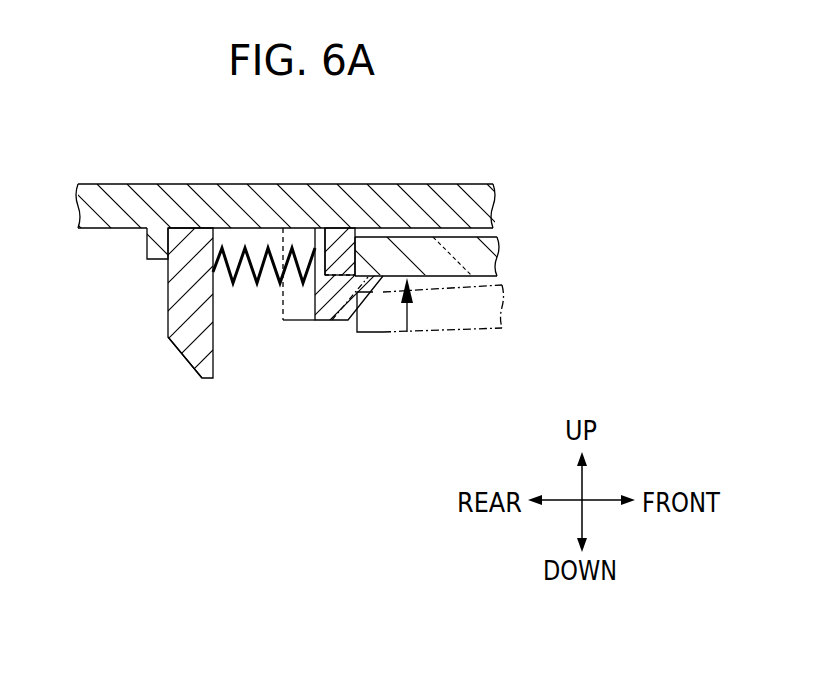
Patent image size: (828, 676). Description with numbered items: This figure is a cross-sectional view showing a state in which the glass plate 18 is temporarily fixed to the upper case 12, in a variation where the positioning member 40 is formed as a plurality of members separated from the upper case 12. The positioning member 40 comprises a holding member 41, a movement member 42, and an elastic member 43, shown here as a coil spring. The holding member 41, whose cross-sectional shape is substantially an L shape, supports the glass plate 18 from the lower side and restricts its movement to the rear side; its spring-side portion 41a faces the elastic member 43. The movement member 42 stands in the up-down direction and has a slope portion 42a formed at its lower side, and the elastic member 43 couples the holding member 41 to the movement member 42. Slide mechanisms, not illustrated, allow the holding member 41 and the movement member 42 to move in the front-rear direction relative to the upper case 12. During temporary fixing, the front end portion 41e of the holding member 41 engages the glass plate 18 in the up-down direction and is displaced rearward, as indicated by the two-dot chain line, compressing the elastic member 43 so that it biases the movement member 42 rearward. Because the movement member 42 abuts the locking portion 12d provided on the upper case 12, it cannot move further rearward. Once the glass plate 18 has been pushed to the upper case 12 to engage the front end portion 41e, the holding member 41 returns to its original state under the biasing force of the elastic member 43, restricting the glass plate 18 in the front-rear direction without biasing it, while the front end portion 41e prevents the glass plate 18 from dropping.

The upper case 12 is at (268, 193).
The locking portion 12d is at (150, 250).
The glass plate 18 is at (418, 248).
The positioning member 40 is at (151, 396).
The holding member 41 is at (327, 320).
The spring seat portion of lock lever 41a is at (287, 323).
The front end portion 41e is at (371, 295).
The movement member 42 is at (195, 358).
The slope portion 42a is at (168, 338).
The elastic member 43 is at (253, 278).